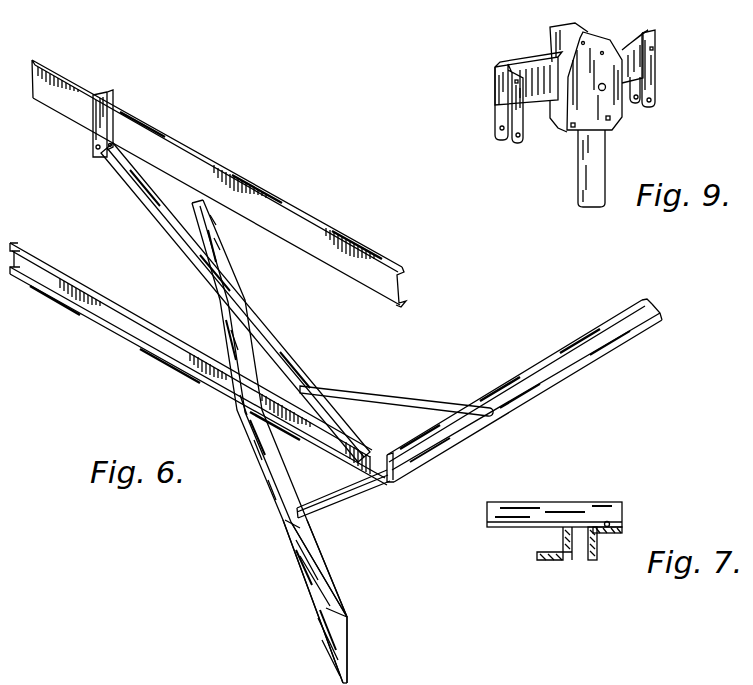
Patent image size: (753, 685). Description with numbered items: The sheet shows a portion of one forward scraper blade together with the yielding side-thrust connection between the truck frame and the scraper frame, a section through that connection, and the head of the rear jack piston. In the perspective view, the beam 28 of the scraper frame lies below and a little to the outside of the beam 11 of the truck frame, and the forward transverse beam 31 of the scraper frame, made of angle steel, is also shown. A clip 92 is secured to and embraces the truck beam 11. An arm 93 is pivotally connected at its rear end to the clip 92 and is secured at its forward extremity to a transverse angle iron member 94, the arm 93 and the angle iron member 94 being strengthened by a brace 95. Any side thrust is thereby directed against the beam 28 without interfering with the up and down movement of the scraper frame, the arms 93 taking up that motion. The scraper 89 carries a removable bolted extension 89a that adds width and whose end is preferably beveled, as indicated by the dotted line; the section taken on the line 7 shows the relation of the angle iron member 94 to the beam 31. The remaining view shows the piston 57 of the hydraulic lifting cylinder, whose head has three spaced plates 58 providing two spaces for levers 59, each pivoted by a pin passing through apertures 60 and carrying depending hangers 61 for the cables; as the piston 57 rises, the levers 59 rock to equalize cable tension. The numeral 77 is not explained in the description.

In FIG. 6, the section line 7 is at (517, 375).
In FIG. 6, the truck frame beam 11 is at (312, 247).
In FIG. 6, the scraper frame beam 28 is at (107, 318).
In FIG. 6, the forward transverse beam 31 is at (348, 488).
In FIG. 7, the forward transverse beam 31 is at (573, 550).
In FIG. 9, the piston 57 is at (580, 182).
In FIG. 9, the spaced plates 58 is at (570, 43).
In FIG. 9, the lever 59 is at (520, 63).
In FIG. 9, the aperture 60 is at (608, 92).
In FIG. 9, the hanger 61 is at (502, 118).
In FIG. 6, the member 77 is at (483, 678).
In FIG. 6, the scraper 89 is at (220, 323).
In FIG. 6, the scraper extension 89a is at (325, 615).
In FIG. 6, the clip 92 is at (100, 140).
In FIG. 6, the arm 93 is at (278, 337).
In FIG. 7, the arm 93 is at (530, 508).
In FIG. 6, the transverse angle iron member 94 is at (548, 355).
In FIG. 7, the transverse angle iron member 94 is at (622, 530).
In FIG. 6, the brace 95 is at (385, 392).